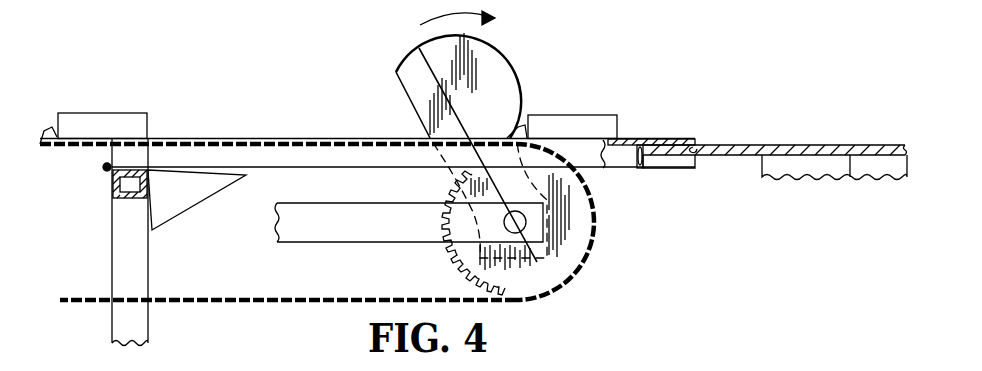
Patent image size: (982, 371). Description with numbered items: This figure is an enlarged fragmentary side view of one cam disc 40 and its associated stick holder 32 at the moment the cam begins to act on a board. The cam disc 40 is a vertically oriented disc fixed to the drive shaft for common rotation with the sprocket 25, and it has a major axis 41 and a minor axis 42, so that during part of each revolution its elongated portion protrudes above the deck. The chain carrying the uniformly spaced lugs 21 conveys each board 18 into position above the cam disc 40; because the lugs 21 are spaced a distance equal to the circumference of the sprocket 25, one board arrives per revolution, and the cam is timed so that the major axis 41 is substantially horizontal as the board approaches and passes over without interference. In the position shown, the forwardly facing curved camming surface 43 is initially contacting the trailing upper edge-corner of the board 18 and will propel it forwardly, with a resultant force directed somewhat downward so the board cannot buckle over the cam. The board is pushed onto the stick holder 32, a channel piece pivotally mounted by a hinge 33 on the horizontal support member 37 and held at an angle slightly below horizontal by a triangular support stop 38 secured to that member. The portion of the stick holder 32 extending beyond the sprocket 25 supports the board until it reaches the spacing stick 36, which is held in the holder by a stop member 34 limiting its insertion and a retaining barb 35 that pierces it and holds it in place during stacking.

The board 18 is at (127, 122).
The lug 21 is at (45, 128).
The sprocket 25 is at (575, 240).
The stick holder 32 is at (660, 134).
The hinge 33 is at (102, 170).
The stop member 34 is at (633, 155).
The retaining barb 35 is at (693, 147).
The spacing stick 36 is at (853, 147).
The horizontal support member 37 is at (112, 192).
The triangular support stop 38 is at (205, 188).
The cam disc 40 is at (419, 71).
The major axis 41 is at (447, 97).
The minor axis 42 is at (545, 205).
The camming surface 43 is at (525, 72).